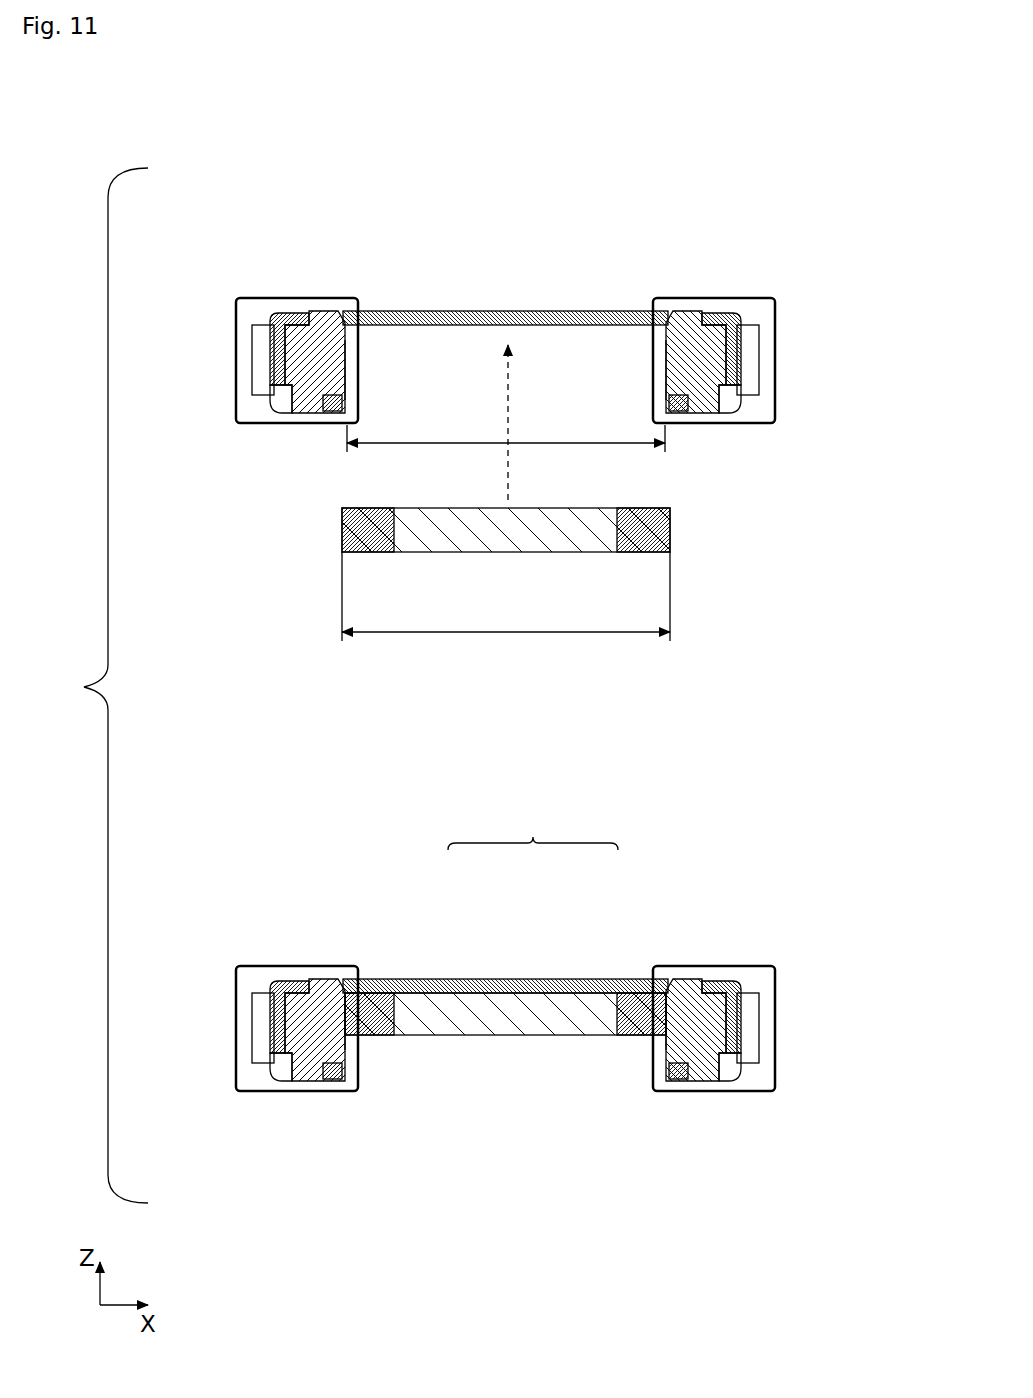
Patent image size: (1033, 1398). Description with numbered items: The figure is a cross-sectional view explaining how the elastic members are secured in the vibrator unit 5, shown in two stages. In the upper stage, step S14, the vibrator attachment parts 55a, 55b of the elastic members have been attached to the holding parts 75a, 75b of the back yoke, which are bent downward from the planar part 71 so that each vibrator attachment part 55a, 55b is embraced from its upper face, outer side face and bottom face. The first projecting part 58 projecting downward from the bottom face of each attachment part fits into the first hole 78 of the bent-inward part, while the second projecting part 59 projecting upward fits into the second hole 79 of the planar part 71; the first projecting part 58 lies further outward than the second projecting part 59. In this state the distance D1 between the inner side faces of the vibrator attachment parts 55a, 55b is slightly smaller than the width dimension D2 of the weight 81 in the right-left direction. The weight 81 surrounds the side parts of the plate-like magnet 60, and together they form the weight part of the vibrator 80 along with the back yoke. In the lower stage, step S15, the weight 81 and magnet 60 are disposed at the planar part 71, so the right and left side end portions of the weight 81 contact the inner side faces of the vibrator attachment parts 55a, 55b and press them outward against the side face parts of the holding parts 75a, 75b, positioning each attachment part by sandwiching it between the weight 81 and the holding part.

The vibrator unit 5 is at (216, 930).
The vibrator attachment part 55a is at (665, 360).
The vibrator attachment part 55b is at (347, 360).
The first projecting part 58 is at (313, 413).
The second projecting part 59 is at (338, 310).
The magnet 60 is at (445, 530).
The planar part 71 is at (525, 311).
The holding part 75a is at (752, 355).
The holding part 75b is at (260, 355).
The first hole 78 is at (282, 407).
The second hole 79 is at (313, 310).
The vibrator 80 is at (533, 825).
The weight 81 is at (630, 550).
The distance D1 is at (506, 422).
The width dimension D2 is at (506, 596).
The step S14 is at (795, 256).
The step S15 is at (795, 922).